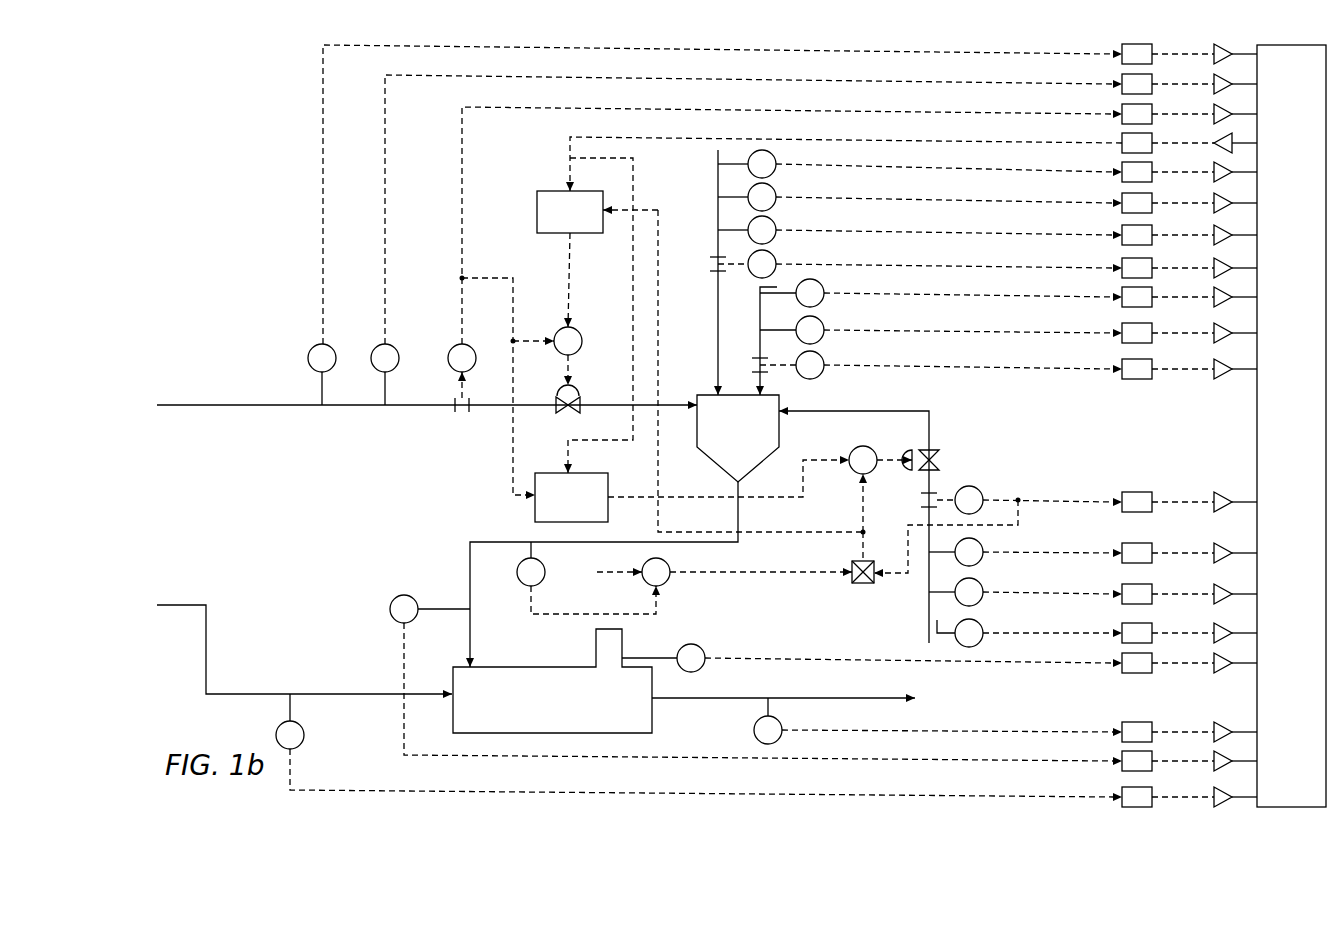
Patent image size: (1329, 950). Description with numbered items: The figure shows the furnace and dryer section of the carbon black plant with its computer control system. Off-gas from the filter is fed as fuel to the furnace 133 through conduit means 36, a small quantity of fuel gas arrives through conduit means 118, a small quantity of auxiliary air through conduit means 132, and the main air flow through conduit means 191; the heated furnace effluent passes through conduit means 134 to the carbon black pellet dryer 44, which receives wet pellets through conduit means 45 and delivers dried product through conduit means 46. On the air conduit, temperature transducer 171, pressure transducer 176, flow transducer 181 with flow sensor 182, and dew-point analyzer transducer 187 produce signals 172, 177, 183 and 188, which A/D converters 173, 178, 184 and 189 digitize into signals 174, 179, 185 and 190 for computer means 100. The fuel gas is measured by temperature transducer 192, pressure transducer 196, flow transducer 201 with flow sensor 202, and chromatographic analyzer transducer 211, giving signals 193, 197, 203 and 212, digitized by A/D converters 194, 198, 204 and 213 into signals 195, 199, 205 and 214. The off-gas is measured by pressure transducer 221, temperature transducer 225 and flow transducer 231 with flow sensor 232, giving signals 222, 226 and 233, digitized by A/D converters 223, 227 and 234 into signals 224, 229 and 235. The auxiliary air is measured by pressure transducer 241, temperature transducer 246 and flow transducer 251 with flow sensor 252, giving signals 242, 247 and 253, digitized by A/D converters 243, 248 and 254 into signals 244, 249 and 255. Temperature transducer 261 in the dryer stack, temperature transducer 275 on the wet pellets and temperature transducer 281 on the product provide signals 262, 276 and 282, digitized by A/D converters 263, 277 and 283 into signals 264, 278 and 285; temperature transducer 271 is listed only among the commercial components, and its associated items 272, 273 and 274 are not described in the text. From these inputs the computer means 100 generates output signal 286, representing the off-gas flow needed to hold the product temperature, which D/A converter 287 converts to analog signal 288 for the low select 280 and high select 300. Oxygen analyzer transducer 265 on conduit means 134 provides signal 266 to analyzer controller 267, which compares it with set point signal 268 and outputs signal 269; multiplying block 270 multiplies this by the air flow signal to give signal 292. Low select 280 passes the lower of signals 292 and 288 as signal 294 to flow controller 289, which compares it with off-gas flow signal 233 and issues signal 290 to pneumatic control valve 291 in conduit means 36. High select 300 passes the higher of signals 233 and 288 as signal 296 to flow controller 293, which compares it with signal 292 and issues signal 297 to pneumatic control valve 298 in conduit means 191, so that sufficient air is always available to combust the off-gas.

The conduit means 36 is at (235, 408).
The carbon black pellet dryer 44 is at (514, 666).
The conduit means 45 is at (206, 640).
The conduit means 46 is at (736, 698).
The computer means 100 is at (1257, 440).
The conduit means 118 is at (718, 310).
The conduit means 132 is at (760, 304).
The furnace 133 is at (716, 466).
The conduit means 134 is at (496, 540).
The temperature transducer 171 is at (978, 562).
The output signal 172 is at (1044, 552).
The A/D converter 173 is at (1122, 546).
The signal 174 is at (1200, 553).
The pressure transducer 176 is at (980, 602).
The output signal 177 is at (1042, 592).
The A/D converter 178 is at (1122, 588).
The signal 179 is at (1200, 594).
The flow transducer 181 is at (932, 460).
The flow sensor 182 is at (921, 498).
The output signal 183 is at (1044, 500).
The A/D converter 184 is at (1122, 496).
The signal 185 is at (1200, 502).
The analyzer transducer 187 is at (980, 644).
The output signal 188 is at (1040, 633).
The A/D converter 189 is at (1122, 626).
The signal 190 is at (1200, 633).
The conduit means 191 is at (929, 420).
The temperature transducer 192 is at (776, 225).
The output signal 193 is at (982, 234).
The A/D converter 194 is at (1122, 246).
The signal 195 is at (1200, 235).
The pressure transducer 196 is at (776, 192).
The output signal 197 is at (982, 202).
The A/D converter 198 is at (1122, 212).
The signal 199 is at (1200, 203).
The flow transducer 201 is at (776, 258).
The flow sensor 202 is at (710, 264).
The output signal 203 is at (982, 270).
The A/D converter 204 is at (1122, 280).
The signal 205 is at (1200, 268).
The analyzer transducer 211 is at (776, 160).
The output signal 212 is at (985, 170).
The A/D converter 213 is at (1122, 182).
The signal 214 is at (1200, 172).
The pressure transducer 221 is at (308, 360).
The output signal 222 is at (323, 116).
The A/D converter 223 is at (1122, 64).
The signal 224 is at (1200, 84).
The temperature transducer 225 is at (371, 352).
The output signal 226 is at (385, 150).
The A/D converter 227 is at (1122, 94).
The signal 229 is at (1160, 52).
The flow transducer 231 is at (448, 358).
The flow sensor 232 is at (462, 412).
The output signal 233 is at (462, 316).
The A/D converter 234 is at (1122, 124).
The signal 235 is at (1200, 114).
The pressure transducer 241 is at (824, 288).
The output signal 242 is at (982, 300).
The A/D converter 243 is at (1122, 310).
The signal 244 is at (1200, 297).
The temperature transducer 246 is at (824, 324).
The output signal 247 is at (982, 336).
The A/D converter 248 is at (1122, 346).
The signal 249 is at (1200, 333).
The flow transducer 251 is at (824, 360).
The flow sensor 252 is at (766, 378).
The output signal 253 is at (982, 372).
The A/D converter 254 is at (1122, 382).
The signal 255 is at (1200, 369).
The temperature transducer 261 is at (692, 644).
The output signal 262 is at (760, 658).
The A/D converter 263 is at (1122, 658).
The signal 264 is at (1200, 663).
The analyzer transducer 265 is at (544, 580).
The output signal 266 is at (531, 602).
The analyzer controller 267 is at (662, 558).
The set point signal 268 is at (608, 574).
The signal 269 is at (760, 574).
The multiplying block 270 is at (863, 583).
The temperature transducer 271 is at (404, 595).
The temperature signal line 272 is at (484, 756).
The A/D converter 273 is at (1122, 754).
The computer input 274 is at (1200, 761).
The temperature transducer 275 is at (304, 733).
The output signal 276 is at (370, 792).
The A/D converter 277 is at (1122, 790).
The signal 278 is at (1200, 797).
The low select 280 is at (537, 210).
The temperature transducer 281 is at (754, 732).
The output signal 282 is at (970, 730).
The A/D converter 283 is at (1122, 724).
The signal 285 is at (1200, 732).
The output signal 286 is at (1200, 143).
The D/A converter 287 is at (1122, 154).
The signal 288 is at (570, 138).
The flow controller 289 is at (582, 336).
The signal 290 is at (568, 372).
The pneumatic control valve 291 is at (580, 390).
The signal 292 is at (866, 514).
The flow controller 293 is at (862, 446).
The signal 294 is at (569, 265).
The signal 296 is at (784, 500).
The signal 297 is at (898, 458).
The pneumatic control valve 298 is at (940, 452).
The high select 300 is at (560, 473).